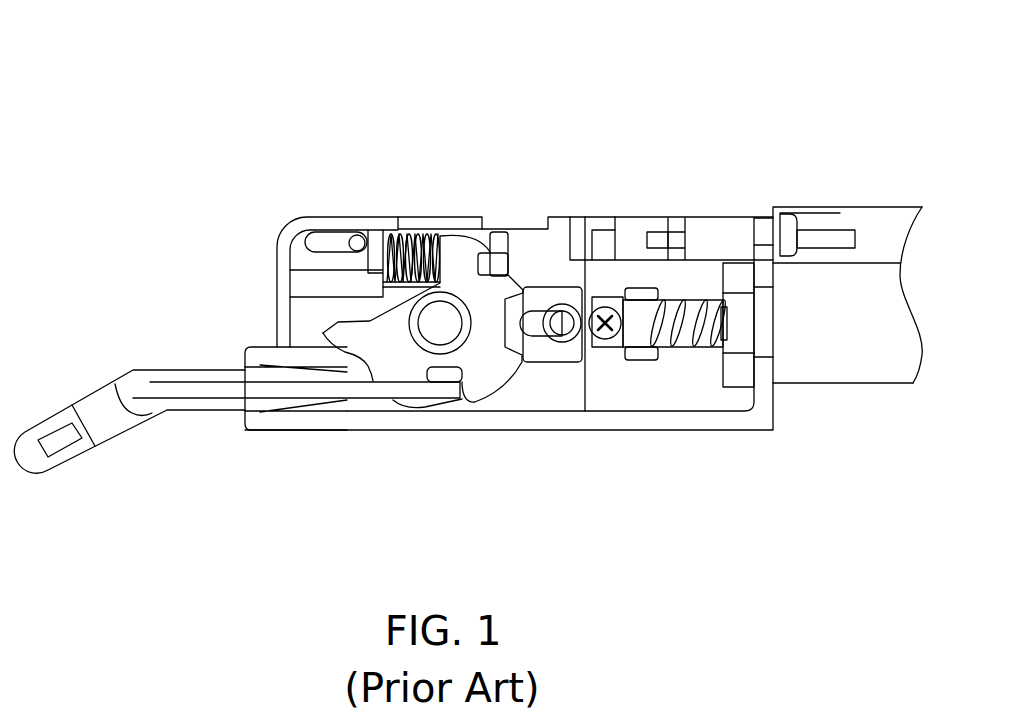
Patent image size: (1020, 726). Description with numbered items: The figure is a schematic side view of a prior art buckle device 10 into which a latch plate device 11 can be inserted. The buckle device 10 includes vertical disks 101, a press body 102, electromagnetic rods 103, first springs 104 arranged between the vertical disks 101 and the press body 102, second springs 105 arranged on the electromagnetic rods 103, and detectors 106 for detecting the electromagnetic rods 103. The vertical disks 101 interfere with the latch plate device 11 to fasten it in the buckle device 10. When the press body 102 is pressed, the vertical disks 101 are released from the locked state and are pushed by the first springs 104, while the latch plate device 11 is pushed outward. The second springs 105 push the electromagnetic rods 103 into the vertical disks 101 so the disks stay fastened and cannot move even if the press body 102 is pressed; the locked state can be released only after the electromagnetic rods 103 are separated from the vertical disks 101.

The buckle device 10 is at (222, 114).
The latch plate device 11 is at (105, 369).
The vertical disk 101 is at (457, 258).
The press body 102 is at (300, 220).
The electromagnetic rod 103 is at (638, 333).
The first spring 104 is at (430, 235).
The second spring 105 is at (665, 333).
The detector 106 is at (625, 232).